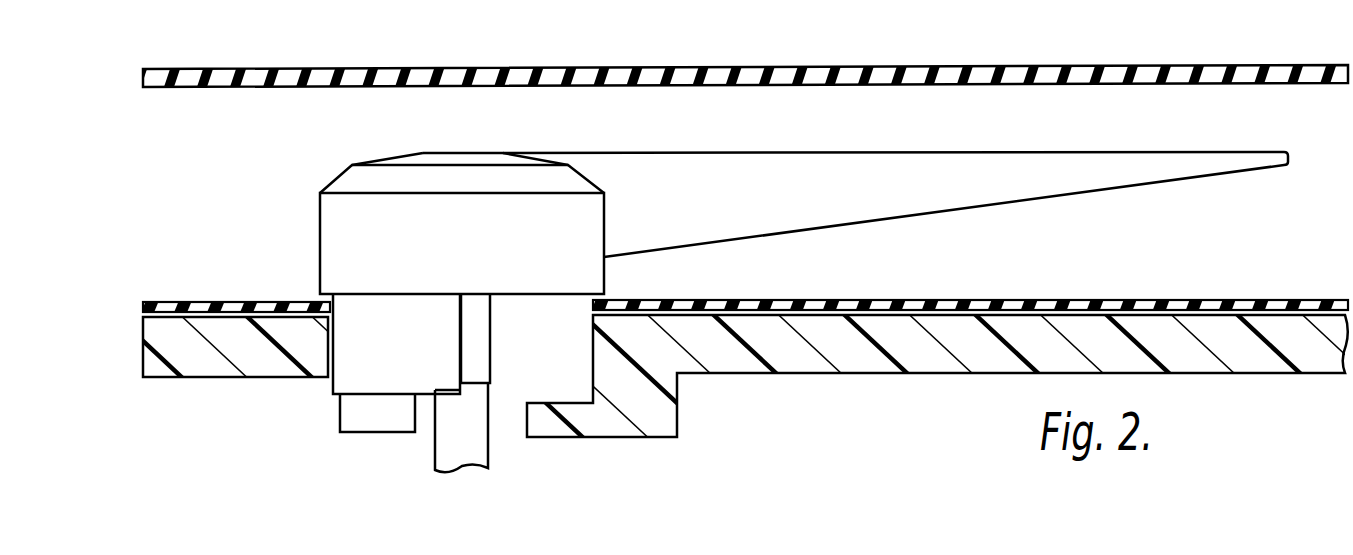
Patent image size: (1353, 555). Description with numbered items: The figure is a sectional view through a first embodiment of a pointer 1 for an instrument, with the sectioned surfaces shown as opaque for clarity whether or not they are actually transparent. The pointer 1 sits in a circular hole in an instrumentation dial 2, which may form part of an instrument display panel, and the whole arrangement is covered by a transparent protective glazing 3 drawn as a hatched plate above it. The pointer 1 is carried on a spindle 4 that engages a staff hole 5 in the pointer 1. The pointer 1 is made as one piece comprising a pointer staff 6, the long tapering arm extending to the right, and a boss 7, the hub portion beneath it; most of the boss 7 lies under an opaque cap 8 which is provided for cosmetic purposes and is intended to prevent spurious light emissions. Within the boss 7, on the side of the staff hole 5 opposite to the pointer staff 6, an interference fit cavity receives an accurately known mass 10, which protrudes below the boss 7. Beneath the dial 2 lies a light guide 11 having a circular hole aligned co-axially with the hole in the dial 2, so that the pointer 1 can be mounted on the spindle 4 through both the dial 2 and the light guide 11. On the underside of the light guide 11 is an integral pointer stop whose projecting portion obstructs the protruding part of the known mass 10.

The pointer 1 is at (308, 176).
The instrumentation dial 2 is at (213, 302).
The transparent protective glazing 3 is at (324, 74).
The spindle 4 is at (485, 455).
The staff hole 5 is at (478, 386).
The pointer staff 6 is at (1075, 165).
The boss 7 is at (333, 386).
The opaque cap 8 is at (355, 175).
The known mass 10 is at (376, 426).
The light guide 11 is at (212, 366).